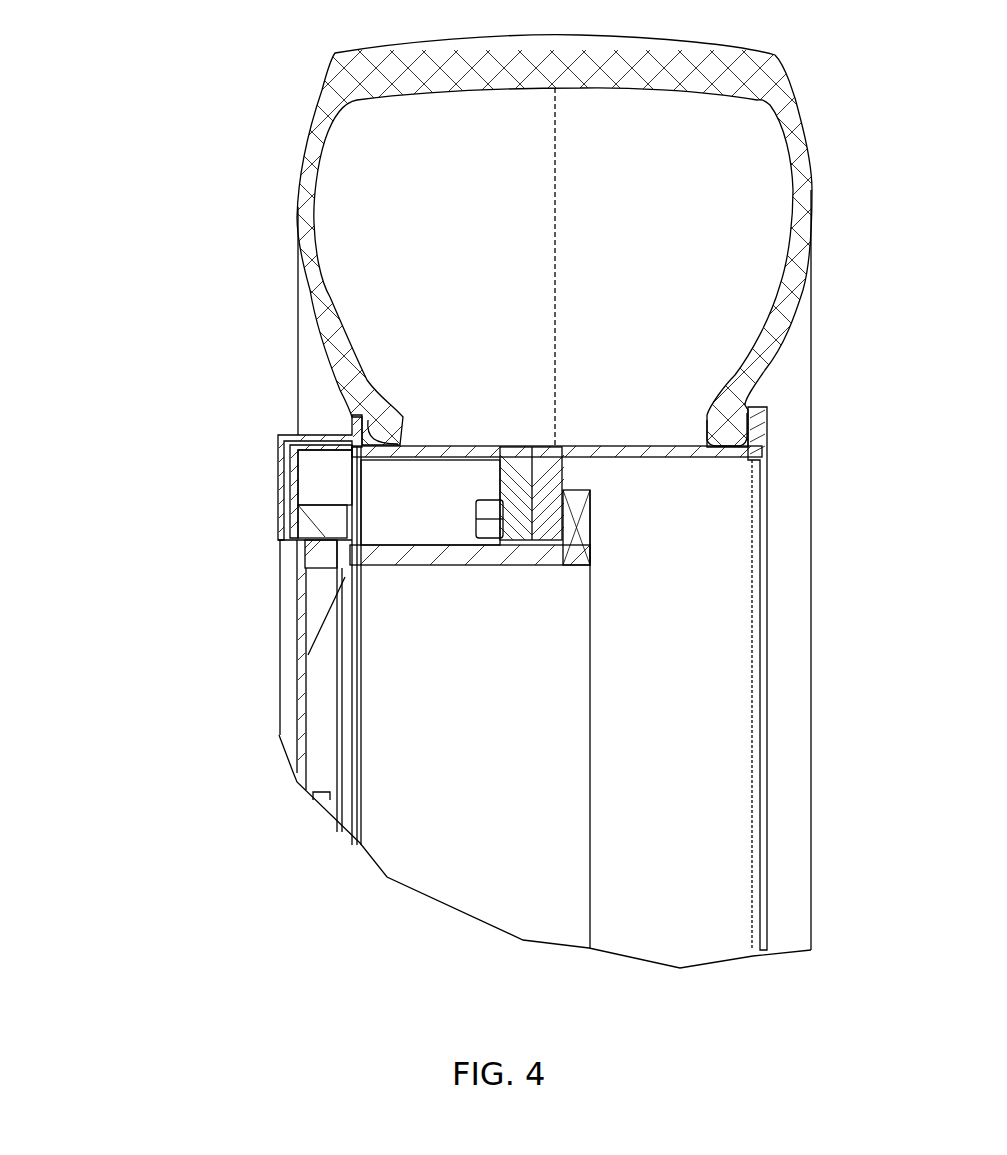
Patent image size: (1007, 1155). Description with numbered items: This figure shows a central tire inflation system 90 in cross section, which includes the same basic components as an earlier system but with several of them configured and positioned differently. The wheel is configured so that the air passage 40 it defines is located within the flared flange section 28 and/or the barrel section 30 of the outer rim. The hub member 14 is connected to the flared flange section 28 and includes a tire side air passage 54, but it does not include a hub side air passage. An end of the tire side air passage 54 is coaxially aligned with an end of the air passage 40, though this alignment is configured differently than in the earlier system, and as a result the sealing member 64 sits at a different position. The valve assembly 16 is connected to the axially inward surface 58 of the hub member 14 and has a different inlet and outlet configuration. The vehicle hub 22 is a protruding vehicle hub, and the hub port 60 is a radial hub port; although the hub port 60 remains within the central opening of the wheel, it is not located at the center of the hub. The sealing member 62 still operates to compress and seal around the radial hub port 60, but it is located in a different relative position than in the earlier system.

The central tire inflation system 90 is at (126, 197).
The flared flange section 28 is at (350, 416).
The air passage 40 is at (410, 445).
The barrel section 30 is at (490, 452).
The sealing member 64 is at (350, 435).
The tire side air passage 54 is at (291, 476).
The hub member 14 is at (283, 518).
The valve assembly 16 is at (281, 533).
The hub port 60 is at (312, 562).
The vehicle hub 22 is at (297, 585).
The axially inward surface 58 is at (300, 481).
The sealing member 62 is at (350, 545).